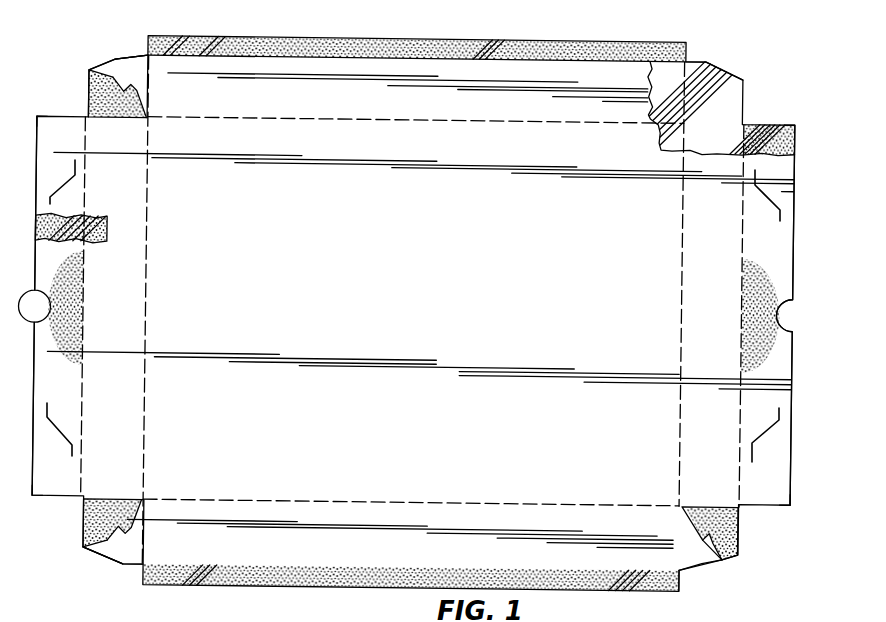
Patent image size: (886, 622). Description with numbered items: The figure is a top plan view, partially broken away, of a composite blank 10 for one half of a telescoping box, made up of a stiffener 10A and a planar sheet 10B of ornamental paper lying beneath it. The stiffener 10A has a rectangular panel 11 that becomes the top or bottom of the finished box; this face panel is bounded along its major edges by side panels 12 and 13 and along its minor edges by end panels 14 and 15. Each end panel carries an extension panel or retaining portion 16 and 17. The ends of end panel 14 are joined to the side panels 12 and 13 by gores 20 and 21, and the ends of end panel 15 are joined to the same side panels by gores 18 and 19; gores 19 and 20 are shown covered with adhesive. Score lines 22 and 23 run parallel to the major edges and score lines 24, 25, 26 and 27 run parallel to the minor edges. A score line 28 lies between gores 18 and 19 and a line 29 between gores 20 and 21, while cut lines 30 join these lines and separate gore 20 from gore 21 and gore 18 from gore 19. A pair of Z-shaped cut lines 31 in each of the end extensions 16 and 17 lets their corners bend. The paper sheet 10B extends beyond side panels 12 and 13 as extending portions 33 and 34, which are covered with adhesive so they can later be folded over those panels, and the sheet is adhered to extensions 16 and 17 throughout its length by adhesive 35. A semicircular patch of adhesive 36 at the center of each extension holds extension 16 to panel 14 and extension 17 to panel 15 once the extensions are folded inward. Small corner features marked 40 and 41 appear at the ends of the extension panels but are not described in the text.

The composite blank 10 is at (124, 567).
The stiffener 10A is at (278, 72).
The planar sheet 10B is at (705, 104).
The rectangular panel 11 is at (386, 274).
The side panel 12 is at (404, 104).
The side panel 13 is at (400, 554).
The end panel 14 is at (103, 317).
The end panel 15 is at (700, 324).
The extension panel 16 is at (40, 389).
The extension panel 17 is at (758, 249).
The gore 18 is at (705, 573).
The gore 19 is at (741, 533).
The gore 20 is at (87, 89).
The gore 21 is at (126, 58).
The score line 22 is at (497, 501).
The score line 23 is at (495, 126).
The score line 24 is at (150, 410).
The score line 25 is at (86, 410).
The score line 26 is at (679, 421).
The score line 27 is at (741, 421).
The score line 28 is at (718, 561).
The line 29 is at (113, 72).
The cut line 30 is at (140, 97).
The Z-shaped cut line 31 is at (62, 190).
The extending portion 33 is at (552, 50).
The extending portion 34 is at (302, 588).
The adhesive 35 is at (36, 228).
The semicircular patch of adhesive 36 is at (72, 288).
The corner of end flap 40 is at (35, 498).
The corner of end flap 41 is at (37, 116).